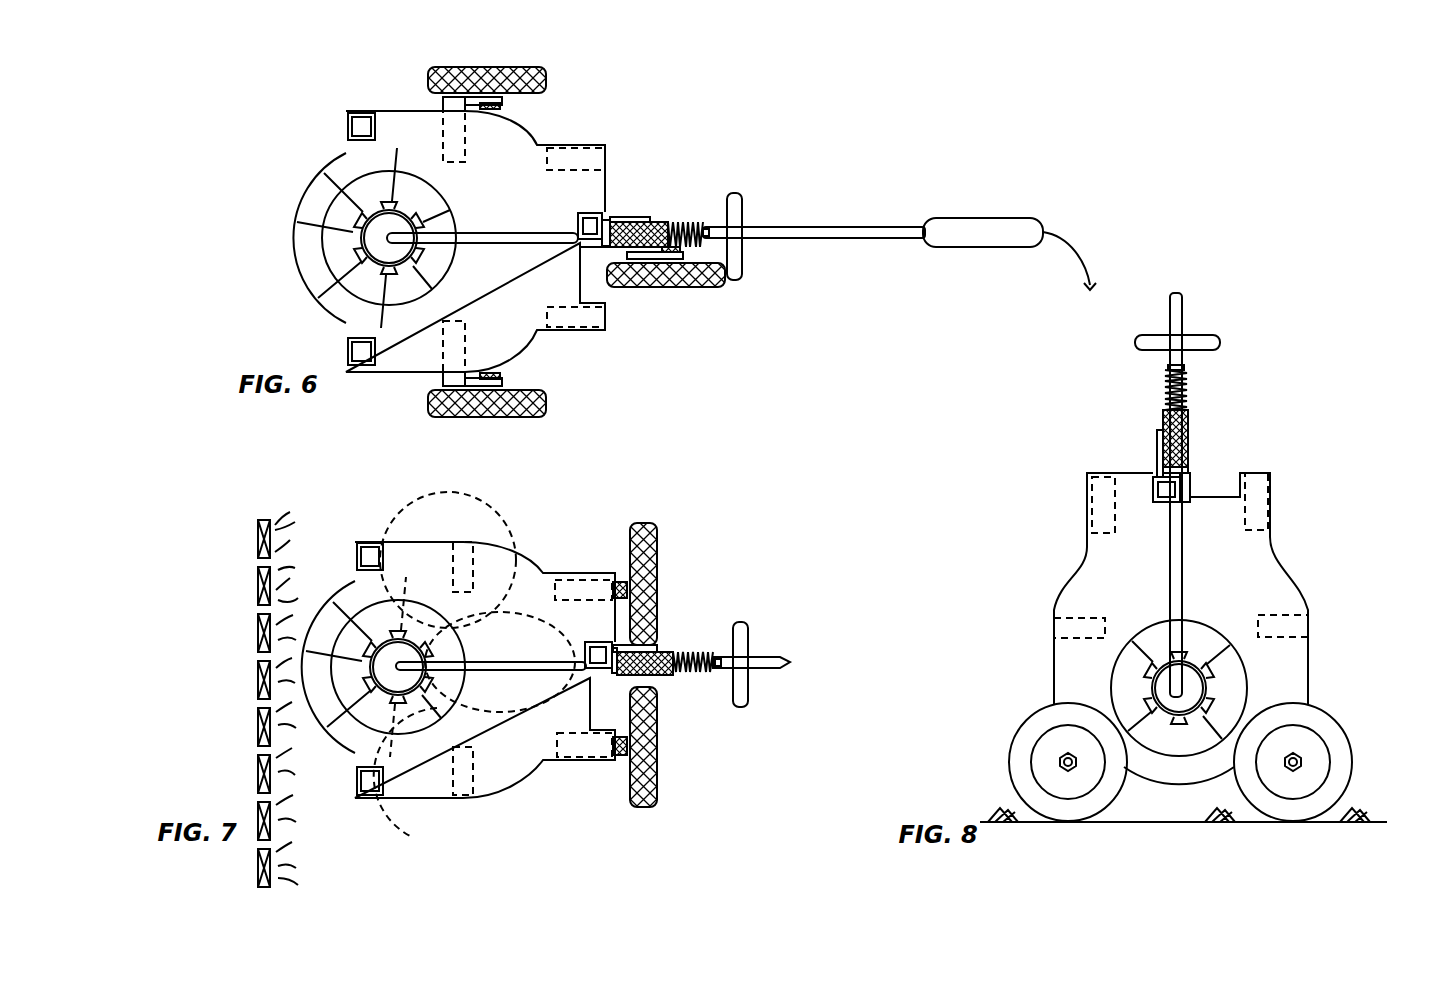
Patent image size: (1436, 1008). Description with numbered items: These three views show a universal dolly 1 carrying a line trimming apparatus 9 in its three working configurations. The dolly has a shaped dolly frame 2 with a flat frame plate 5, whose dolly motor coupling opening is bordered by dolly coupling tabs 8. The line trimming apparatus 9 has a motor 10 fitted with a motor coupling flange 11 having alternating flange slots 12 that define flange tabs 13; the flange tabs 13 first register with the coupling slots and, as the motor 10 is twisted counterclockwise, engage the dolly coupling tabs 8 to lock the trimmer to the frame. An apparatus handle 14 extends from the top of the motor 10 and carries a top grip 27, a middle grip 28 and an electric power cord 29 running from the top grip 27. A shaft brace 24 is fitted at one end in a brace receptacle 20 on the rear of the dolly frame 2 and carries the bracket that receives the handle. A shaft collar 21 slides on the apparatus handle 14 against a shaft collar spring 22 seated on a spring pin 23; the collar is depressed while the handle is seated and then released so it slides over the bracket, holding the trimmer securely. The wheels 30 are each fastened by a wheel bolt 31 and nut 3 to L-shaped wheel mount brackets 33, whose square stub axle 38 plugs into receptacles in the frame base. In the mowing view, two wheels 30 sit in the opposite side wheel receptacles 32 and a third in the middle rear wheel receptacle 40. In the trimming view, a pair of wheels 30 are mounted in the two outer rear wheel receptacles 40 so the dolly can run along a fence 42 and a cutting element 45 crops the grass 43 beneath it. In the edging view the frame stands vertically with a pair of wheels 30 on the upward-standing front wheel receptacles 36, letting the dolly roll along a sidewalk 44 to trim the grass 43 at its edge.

In FIG. 7, the universal dolly 1 is at (515, 530).
In FIG. 7, the dolly frame 2 is at (520, 792).
In FIG. 8, the nut 3 is at (1062, 760).
In FIG. 7, the frame plate 5 is at (475, 643).
In FIG. 6, the dolly coupling tabs 8 is at (352, 237).
In FIG. 7, the dolly coupling tabs 8 is at (372, 670).
In FIG. 8, the dolly coupling tabs 8 is at (1170, 640).
In FIG. 6, the line trimming apparatus 9 is at (1015, 215).
In FIG. 8, the line trimming apparatus 9 is at (1225, 338).
In FIG. 6, the motor 10 is at (405, 262).
In FIG. 8, the motor 10 is at (1198, 688).
In FIG. 6, the motor coupling flange 11 is at (425, 225).
In FIG. 8, the motor coupling flange 11 is at (1145, 665).
In FIG. 6, the flange slots 12 is at (358, 222).
In FIG. 7, the flange slots 12 is at (365, 630).
In FIG. 8, the flange slots 12 is at (1198, 660).
In FIG. 6, the flange tabs 13 is at (342, 158).
In FIG. 7, the flange tabs 13 is at (370, 600).
In FIG. 8, the flange tabs 13 is at (1165, 650).
In FIG. 6, the apparatus handle 14 is at (545, 233).
In FIG. 7, the apparatus handle 14 is at (510, 660).
In FIG. 8, the apparatus handle 14 is at (1185, 318).
In FIG. 6, the brace receptacle 20 is at (585, 244).
In FIG. 7, the brace receptacle 20 is at (585, 660).
In FIG. 8, the brace receptacle 20 is at (1177, 497).
In FIG. 6, the shaft collar 21 is at (650, 220).
In FIG. 8, the shaft collar 21 is at (1190, 426).
In FIG. 6, the shaft collar spring 22 is at (680, 222).
In FIG. 7, the shaft collar spring 22 is at (693, 650).
In FIG. 8, the shaft collar spring 22 is at (1190, 386).
In FIG. 6, the spring pin 23 is at (710, 236).
In FIG. 7, the spring pin 23 is at (725, 672).
In FIG. 8, the spring pin 23 is at (1170, 367).
In FIG. 6, the shaft brace 24 is at (588, 212).
In FIG. 7, the shaft brace 24 is at (592, 648).
In FIG. 8, the shaft brace 24 is at (1165, 492).
In FIG. 6, the top grip 27 is at (935, 220).
In FIG. 6, the middle grip 28 is at (734, 282).
In FIG. 7, the middle grip 28 is at (745, 708).
In FIG. 8, the middle grip 28 is at (1150, 340).
In FIG. 6, the electric power cord 29 is at (1075, 262).
In FIG. 6, the wheels 30 is at (550, 78).
In FIG. 7, the wheels 30 is at (660, 552).
In FIG. 8, the wheels 30 is at (1022, 712).
In FIG. 6, the wheel bolt 31 is at (500, 103).
In FIG. 8, the wheel bolt 31 is at (1075, 765).
In FIG. 6, the side wheel receptacles 32 is at (468, 318).
In FIG. 7, the side wheel receptacles 32 is at (470, 545).
In FIG. 8, the side wheel receptacles 32 is at (1080, 620).
In FIG. 6, the wheel mount brackets 33 is at (440, 102).
In FIG. 7, the wheel mount brackets 33 is at (618, 580).
In FIG. 6, the front wheel receptacles 36 is at (348, 125).
In FIG. 7, the front wheel receptacles 36 is at (372, 545).
In FIG. 6, the stub axle 38 is at (443, 120).
In FIG. 6, the rear wheel receptacles 40 is at (575, 148).
In FIG. 7, the rear wheel receptacles 40 is at (590, 578).
In FIG. 8, the rear wheel receptacles 40 is at (1100, 478).
In FIG. 7, the fence 42 is at (250, 672).
In FIG. 7, the grass 43 is at (298, 527).
In FIG. 8, the grass 43 is at (1235, 816).
In FIG. 8, the sidewalk 44 is at (982, 820).
In FIG. 7, the cutting element 45 is at (450, 512).